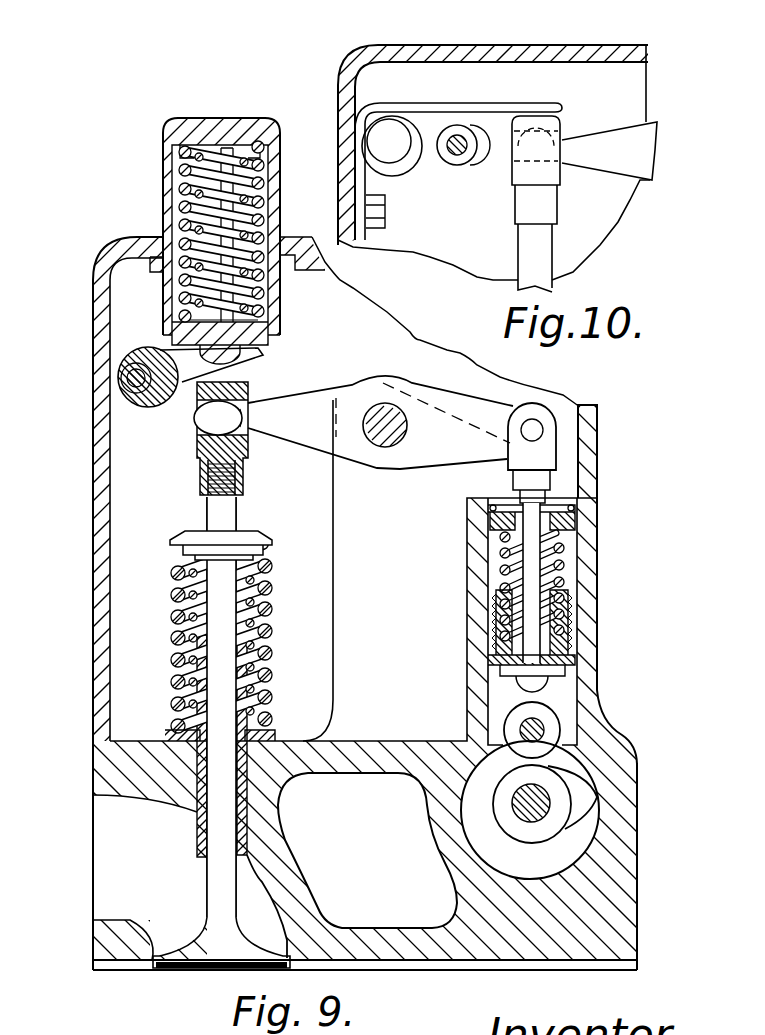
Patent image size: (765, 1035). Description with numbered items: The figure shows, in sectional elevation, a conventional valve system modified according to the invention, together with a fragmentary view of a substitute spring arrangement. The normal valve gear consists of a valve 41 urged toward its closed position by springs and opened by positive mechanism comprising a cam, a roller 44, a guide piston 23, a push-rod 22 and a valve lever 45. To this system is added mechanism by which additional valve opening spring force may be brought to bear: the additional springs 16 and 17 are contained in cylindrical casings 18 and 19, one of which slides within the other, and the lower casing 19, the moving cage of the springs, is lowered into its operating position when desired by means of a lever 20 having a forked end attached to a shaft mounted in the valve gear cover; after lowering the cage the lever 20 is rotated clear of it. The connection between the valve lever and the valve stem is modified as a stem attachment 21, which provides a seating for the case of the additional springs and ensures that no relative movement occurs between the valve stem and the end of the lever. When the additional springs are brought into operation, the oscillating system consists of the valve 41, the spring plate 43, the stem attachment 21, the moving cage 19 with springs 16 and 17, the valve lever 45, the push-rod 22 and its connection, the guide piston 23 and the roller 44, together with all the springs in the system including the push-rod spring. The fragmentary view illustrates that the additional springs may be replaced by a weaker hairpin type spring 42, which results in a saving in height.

In FIG. 9, the additional spring 16 is at (210, 183).
In FIG. 9, the additional spring 17 is at (228, 160).
In FIG. 9, the cylindrical casing 18 is at (262, 176).
In FIG. 9, the cylindrical casing 19 is at (282, 212).
In FIG. 9, the lever 20 is at (263, 356).
In FIG. 9, the stem attachment 21 is at (207, 450).
In FIG. 9, the push-rod 22 is at (536, 575).
In FIG. 9, the guide piston 23 is at (550, 690).
In FIG. 9, the valve 41 is at (192, 969).
In FIG. 10, the hairpin type spring 42 is at (452, 107).
In FIG. 9, the spring plate 43 is at (250, 534).
In FIG. 9, the roller 44 is at (552, 728).
In FIG. 9, the valve lever 45 is at (455, 453).